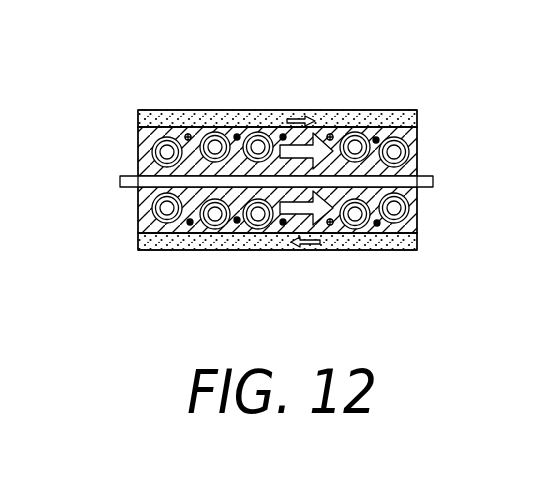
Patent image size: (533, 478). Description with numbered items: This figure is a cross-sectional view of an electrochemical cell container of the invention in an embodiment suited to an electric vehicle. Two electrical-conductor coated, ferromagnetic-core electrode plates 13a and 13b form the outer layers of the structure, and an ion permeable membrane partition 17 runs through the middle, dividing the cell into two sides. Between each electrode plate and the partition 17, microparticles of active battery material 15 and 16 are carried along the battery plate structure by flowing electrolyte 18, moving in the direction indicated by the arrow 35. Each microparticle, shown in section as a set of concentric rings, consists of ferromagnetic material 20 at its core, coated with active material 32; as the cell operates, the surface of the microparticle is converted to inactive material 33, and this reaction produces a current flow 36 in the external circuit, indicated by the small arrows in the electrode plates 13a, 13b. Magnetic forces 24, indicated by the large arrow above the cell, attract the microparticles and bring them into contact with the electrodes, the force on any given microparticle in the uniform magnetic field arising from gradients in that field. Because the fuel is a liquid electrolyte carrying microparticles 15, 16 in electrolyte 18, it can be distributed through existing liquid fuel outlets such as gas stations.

The magnetic forces 24 is at (217, 92).
The electrode plate 13a is at (417, 112).
The electrode plate 13b is at (417, 250).
The fuel microparticles 15 is at (419, 130).
The fuel microparticles 16 is at (419, 210).
The ion permeable membrane partition 17 is at (121, 183).
The electrolyte liquid 18 is at (184, 226).
The ferromagnetic material 20 is at (166, 152).
The active material 32 is at (156, 163).
The inactive material 33 is at (156, 141).
The arrow 35 is at (320, 227).
The current flow 36 is at (284, 120).